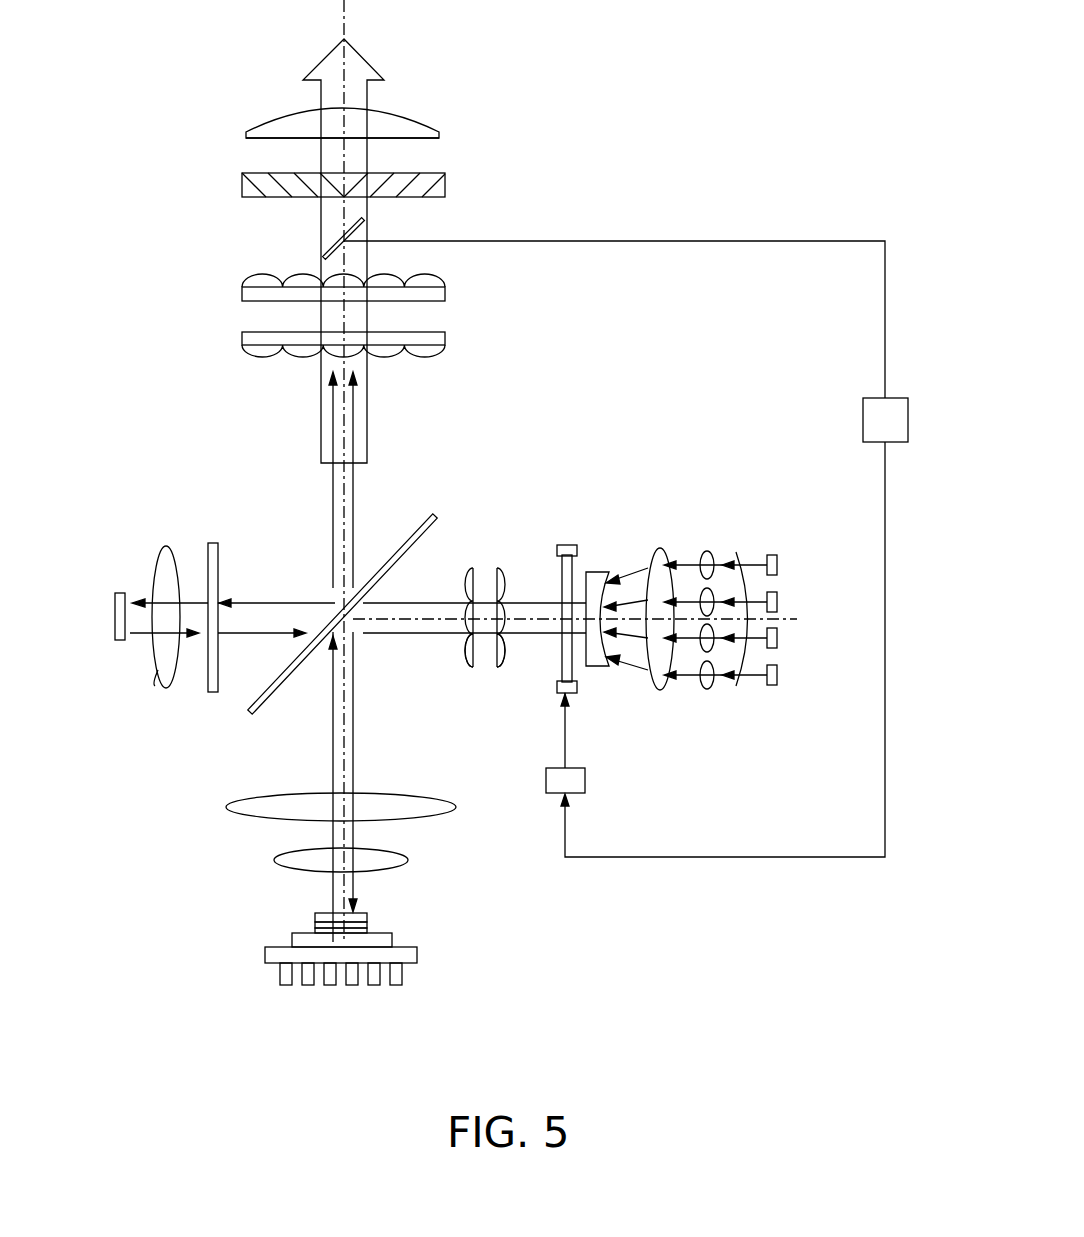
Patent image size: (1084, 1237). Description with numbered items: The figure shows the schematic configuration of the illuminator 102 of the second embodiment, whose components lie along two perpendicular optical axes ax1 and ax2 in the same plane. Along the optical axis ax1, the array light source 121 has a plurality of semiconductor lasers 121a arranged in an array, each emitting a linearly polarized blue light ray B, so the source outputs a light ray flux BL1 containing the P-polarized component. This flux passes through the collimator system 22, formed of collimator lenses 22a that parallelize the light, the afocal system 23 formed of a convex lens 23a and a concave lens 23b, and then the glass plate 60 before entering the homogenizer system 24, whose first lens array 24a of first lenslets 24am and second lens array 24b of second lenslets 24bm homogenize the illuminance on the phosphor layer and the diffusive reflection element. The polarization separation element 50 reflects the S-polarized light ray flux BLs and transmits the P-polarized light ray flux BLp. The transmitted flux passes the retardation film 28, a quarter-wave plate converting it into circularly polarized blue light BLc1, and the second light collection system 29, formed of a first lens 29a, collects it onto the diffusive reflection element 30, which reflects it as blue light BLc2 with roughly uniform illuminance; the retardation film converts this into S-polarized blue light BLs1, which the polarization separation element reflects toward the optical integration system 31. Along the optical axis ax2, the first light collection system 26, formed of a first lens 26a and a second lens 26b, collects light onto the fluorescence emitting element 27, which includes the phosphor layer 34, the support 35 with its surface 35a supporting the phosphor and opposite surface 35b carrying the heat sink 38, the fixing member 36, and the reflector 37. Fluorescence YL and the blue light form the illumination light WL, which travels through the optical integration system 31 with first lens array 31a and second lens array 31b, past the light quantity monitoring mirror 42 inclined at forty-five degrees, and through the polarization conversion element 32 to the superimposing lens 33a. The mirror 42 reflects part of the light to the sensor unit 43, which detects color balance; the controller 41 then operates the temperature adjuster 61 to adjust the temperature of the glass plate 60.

The illuminator 102 is at (719, 128).
The optical axis ax2 is at (347, 9).
The optical axis ax1 is at (791, 621).
The illumination light WL is at (319, 100).
The superimposing lens 33a is at (432, 122).
The polarization conversion element 32 is at (446, 188).
The light quantity monitoring mirror 42 is at (330, 249).
The sensor unit 43 is at (863, 411).
The controller 41 is at (580, 788).
The optical integration system 31 is at (411, 316).
The first lens array 31a is at (446, 339).
The second lens array 31b is at (446, 294).
The polarization separation element 50 is at (410, 535).
The diffusive reflection element 30 is at (119, 592).
The second light collection system 29 is at (166, 538).
The first lens 29a is at (157, 669).
The retardation film 28 is at (213, 543).
The homogenizer system 24 is at (497, 559).
The first lens array 24a is at (505, 568).
The second lens array 24b is at (466, 568).
The first lenslets 24am is at (505, 668).
The second lenslets 24bm is at (466, 668).
The afocal system 23 is at (639, 571).
The convex lens 23a is at (661, 548).
The concave lens 23b is at (598, 572).
The collimator system 22 is at (713, 563).
The collimator lenses 22a is at (705, 550).
The array light source 121 is at (769, 574).
The semiconductor lasers 121a is at (780, 602).
The blue light ray B is at (749, 556).
The light ray flux BL1 is at (450, 688).
The light ray flux BLs is at (355, 776).
The light ray flux BLp is at (283, 603).
The S-polarized blue light BLs1 is at (355, 554).
The blue light BLc1 is at (193, 603).
The blue light BLc2 is at (190, 634).
The yellow fluorescent light YL is at (331, 554).
The glass plate 60 is at (572, 670).
The temperature adjuster 61 is at (578, 692).
The first light collection system 26 is at (283, 835).
The first lens 26a is at (231, 803).
The second lens 26b is at (274, 856).
The fluorescence emitting element 27 is at (322, 943).
The phosphor layer 34 is at (368, 916).
The reflector 37 is at (368, 925).
The fixing member 36 is at (368, 930).
The support 35 is at (306, 964).
The surface 35a is at (293, 936).
The surface 35b is at (300, 965).
The heat sink 38 is at (270, 955).